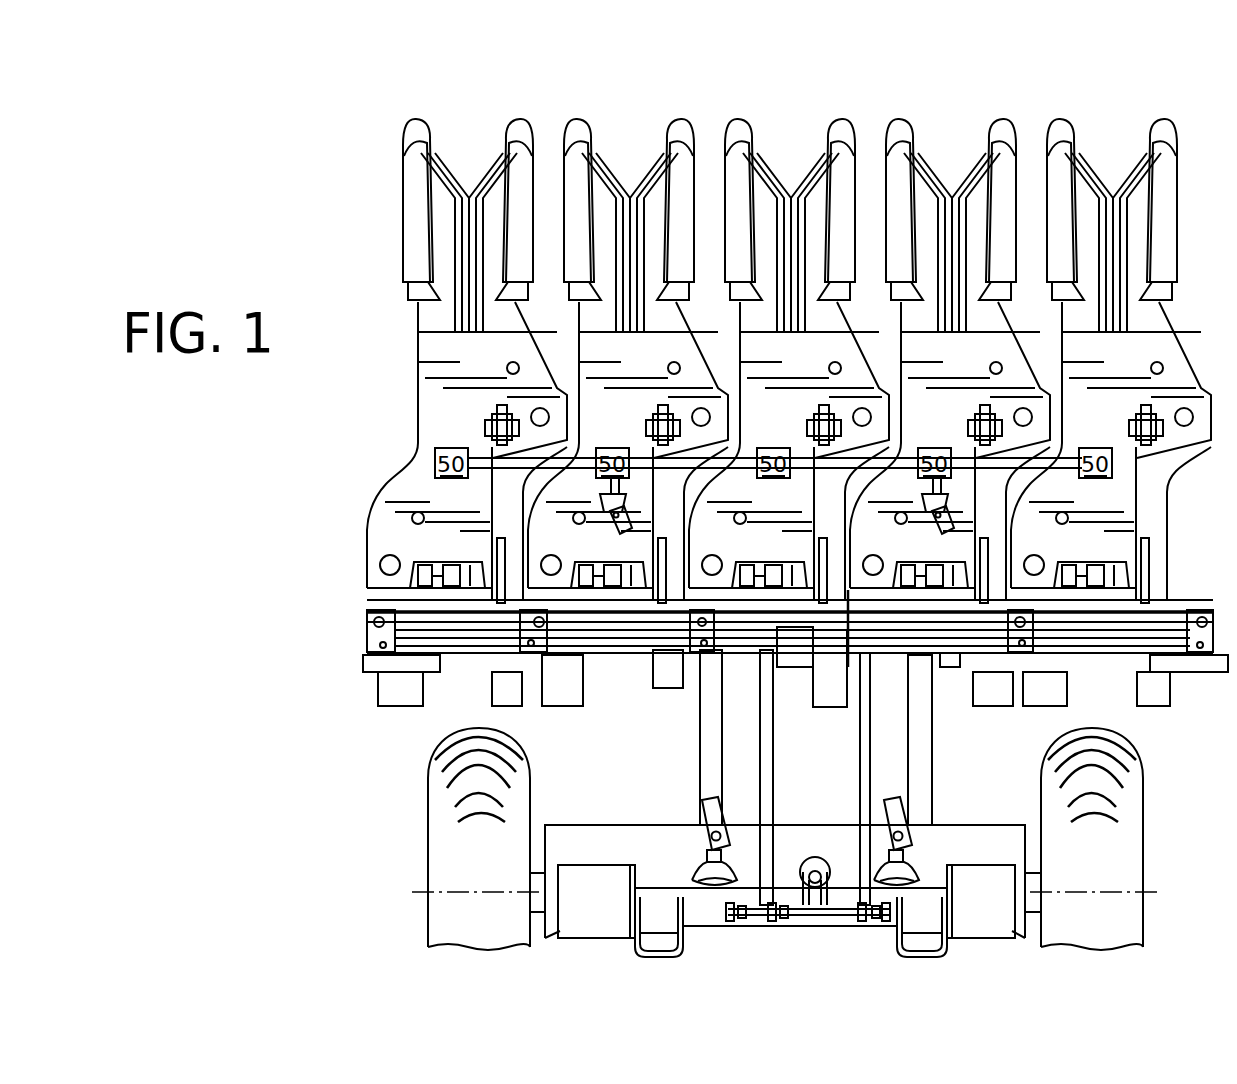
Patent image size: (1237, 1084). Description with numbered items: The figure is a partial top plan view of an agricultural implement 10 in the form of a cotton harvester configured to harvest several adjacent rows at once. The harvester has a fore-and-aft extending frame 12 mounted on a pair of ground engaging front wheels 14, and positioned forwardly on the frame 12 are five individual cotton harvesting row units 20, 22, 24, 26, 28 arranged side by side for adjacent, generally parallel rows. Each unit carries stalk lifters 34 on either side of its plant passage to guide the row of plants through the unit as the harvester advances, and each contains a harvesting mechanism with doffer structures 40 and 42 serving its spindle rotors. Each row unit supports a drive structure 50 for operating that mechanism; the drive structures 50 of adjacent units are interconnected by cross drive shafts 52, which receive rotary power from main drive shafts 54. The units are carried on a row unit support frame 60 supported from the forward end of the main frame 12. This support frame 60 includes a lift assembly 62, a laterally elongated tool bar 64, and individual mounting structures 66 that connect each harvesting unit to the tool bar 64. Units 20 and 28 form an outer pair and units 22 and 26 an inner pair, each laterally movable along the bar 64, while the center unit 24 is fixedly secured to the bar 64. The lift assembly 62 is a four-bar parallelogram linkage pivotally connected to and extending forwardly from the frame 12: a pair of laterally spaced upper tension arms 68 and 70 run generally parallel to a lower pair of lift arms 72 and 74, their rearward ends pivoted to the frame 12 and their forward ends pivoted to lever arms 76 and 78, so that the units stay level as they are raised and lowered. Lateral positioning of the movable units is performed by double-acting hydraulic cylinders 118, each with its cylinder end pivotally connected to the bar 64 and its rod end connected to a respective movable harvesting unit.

The agricultural implement 10 is at (385, 742).
The frame 12 is at (584, 837).
The ground engaging front wheels 14 is at (453, 855).
The cotton harvesting row unit 20 is at (437, 343).
The cotton harvesting row unit 22 is at (508, 152).
The cotton harvesting row unit 24 is at (789, 343).
The cotton harvesting row unit 26 is at (950, 343).
The cotton harvesting row unit 28 is at (1111, 343).
The stalk lifters 34 is at (508, 152).
The doffer structure 40 is at (538, 410).
The doffer structure 42 is at (380, 570).
The drive structure 50 is at (451, 463).
The cross drive shafts 52 is at (594, 458).
The main drive shafts 54 is at (627, 527).
The row unit support frame 60 is at (634, 650).
The lift assembly 62 is at (856, 800).
The tool bar 64 is at (358, 606).
The mounting structures 66 is at (458, 585).
The upper tension arm 68 is at (760, 735).
The upper tension arm 70 is at (858, 764).
The lift arm 72 is at (700, 745).
The lift arm 74 is at (912, 748).
The lever arm 76 is at (790, 668).
The lever arm 78 is at (847, 668).
The hydraulic cylinder 118 is at (465, 655).